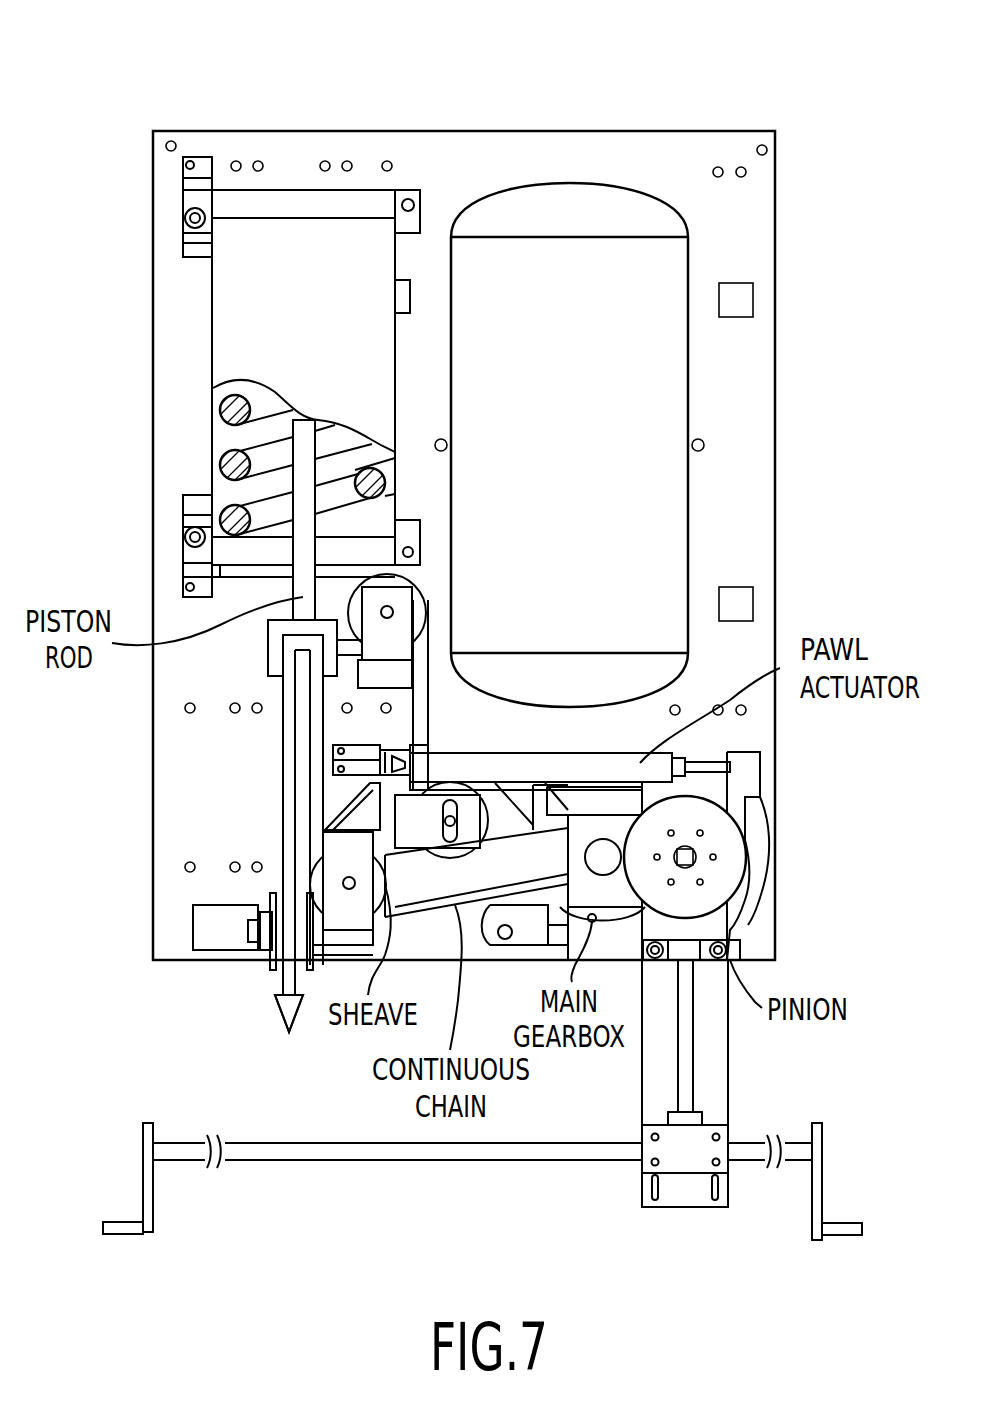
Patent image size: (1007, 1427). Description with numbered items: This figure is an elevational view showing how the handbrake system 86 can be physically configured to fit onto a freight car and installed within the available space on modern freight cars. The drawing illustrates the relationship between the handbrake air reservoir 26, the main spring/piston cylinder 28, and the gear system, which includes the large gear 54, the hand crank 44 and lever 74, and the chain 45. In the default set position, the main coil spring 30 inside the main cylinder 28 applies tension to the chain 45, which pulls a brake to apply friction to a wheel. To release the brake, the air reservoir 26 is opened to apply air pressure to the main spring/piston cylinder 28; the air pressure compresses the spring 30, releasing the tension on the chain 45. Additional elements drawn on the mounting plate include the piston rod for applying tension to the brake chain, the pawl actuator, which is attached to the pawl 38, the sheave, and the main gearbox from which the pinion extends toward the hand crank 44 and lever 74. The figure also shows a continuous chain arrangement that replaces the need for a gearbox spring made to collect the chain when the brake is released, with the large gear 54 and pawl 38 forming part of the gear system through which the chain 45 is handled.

The handbrake system 86 is at (720, 103).
The handbrake air reservoir 26 is at (672, 277).
The main spring/piston cylinder 28 is at (242, 360).
The main coil spring 30 is at (380, 515).
The pawl 38 is at (745, 795).
The large gear 54 is at (735, 885).
The hand crank 44 is at (436, 1160).
The lever 74 is at (153, 1220).
The chain 45 is at (275, 978).